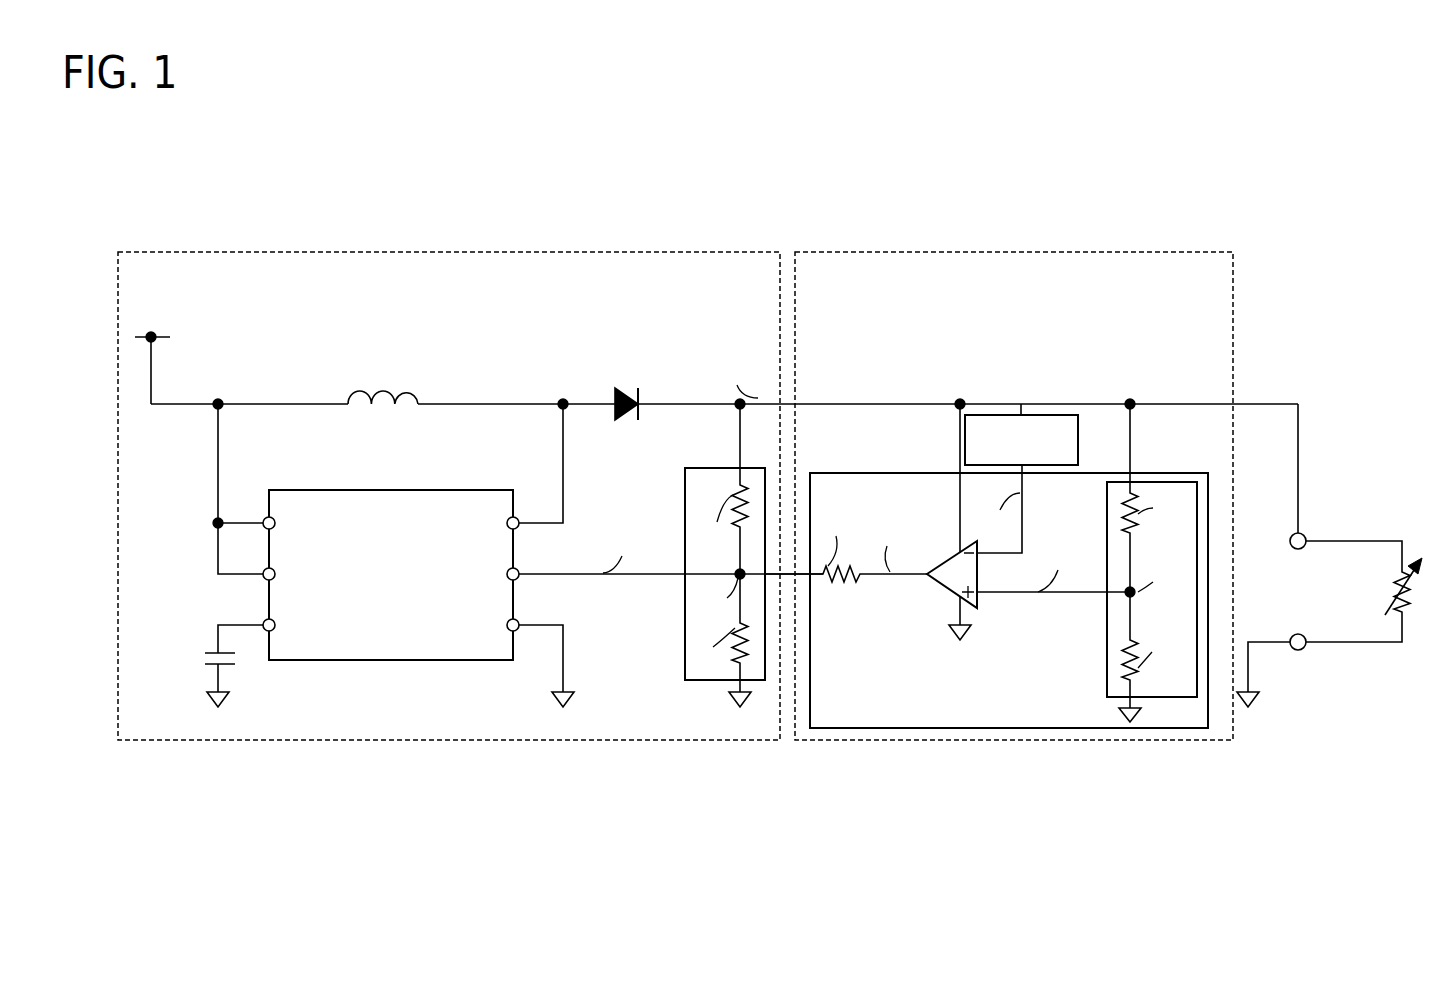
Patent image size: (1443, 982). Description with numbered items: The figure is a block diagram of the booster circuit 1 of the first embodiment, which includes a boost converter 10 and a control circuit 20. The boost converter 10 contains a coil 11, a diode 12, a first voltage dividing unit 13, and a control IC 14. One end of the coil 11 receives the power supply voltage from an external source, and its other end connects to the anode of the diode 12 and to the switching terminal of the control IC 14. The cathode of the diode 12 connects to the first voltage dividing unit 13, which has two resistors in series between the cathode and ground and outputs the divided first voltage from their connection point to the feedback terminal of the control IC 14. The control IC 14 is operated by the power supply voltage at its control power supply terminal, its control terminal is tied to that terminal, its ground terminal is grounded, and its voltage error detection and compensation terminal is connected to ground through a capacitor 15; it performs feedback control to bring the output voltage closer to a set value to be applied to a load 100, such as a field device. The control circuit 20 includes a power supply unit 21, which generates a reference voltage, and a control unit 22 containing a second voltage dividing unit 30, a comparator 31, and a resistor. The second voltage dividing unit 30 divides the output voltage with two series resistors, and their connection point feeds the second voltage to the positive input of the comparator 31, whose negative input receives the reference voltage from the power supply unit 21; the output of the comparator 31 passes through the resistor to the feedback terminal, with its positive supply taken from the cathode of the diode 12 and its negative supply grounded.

The booster circuit 1 is at (190, 144).
The boost converter 10 is at (467, 250).
The coil 11 is at (377, 373).
The diode 12 is at (623, 392).
The first voltage dividing unit 13 is at (706, 467).
The control IC 14 is at (395, 490).
The capacitor 15 is at (210, 647).
The control circuit 20 is at (1012, 250).
The power supply unit 21 is at (1022, 413).
The control unit 22 is at (860, 473).
The second voltage dividing unit 30 is at (1106, 515).
The comparator 31 is at (950, 556).
The load 100 is at (1385, 598).